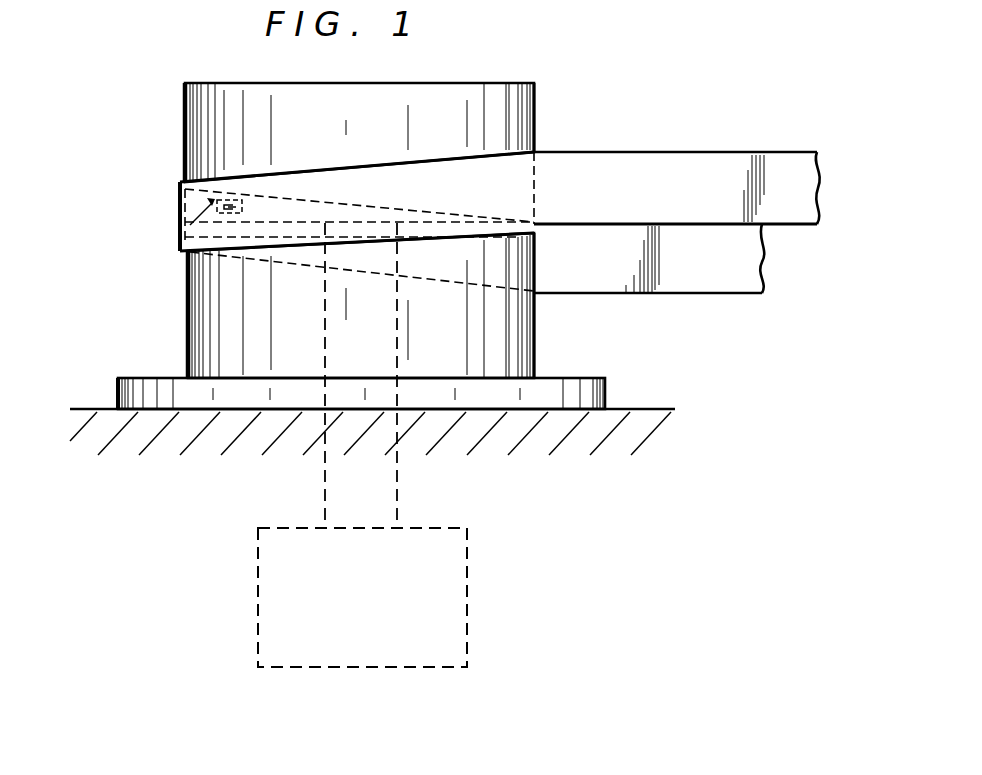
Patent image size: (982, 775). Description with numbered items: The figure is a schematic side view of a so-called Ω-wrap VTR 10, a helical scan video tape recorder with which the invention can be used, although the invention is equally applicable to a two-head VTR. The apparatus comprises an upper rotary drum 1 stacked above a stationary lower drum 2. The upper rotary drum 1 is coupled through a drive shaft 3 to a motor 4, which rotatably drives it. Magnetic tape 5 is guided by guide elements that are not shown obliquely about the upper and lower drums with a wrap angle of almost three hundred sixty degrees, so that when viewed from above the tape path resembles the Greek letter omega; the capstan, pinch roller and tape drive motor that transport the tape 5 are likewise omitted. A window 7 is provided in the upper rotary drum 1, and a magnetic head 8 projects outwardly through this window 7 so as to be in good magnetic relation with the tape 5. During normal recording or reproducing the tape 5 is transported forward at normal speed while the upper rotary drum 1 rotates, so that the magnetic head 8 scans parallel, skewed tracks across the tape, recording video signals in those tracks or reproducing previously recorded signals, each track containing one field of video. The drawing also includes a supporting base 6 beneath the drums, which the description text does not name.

The Ω-wrap VTR 10 is at (338, 219).
The upper rotary drum 1 is at (529, 112).
The stationary lower drum 2 is at (190, 335).
The drive shaft 3 is at (395, 480).
The motor 4 is at (455, 615).
The magnetic tape 5 is at (682, 163).
The base plate 6 is at (650, 418).
The window 7 is at (212, 204).
The magnetic head 8 is at (190, 225).